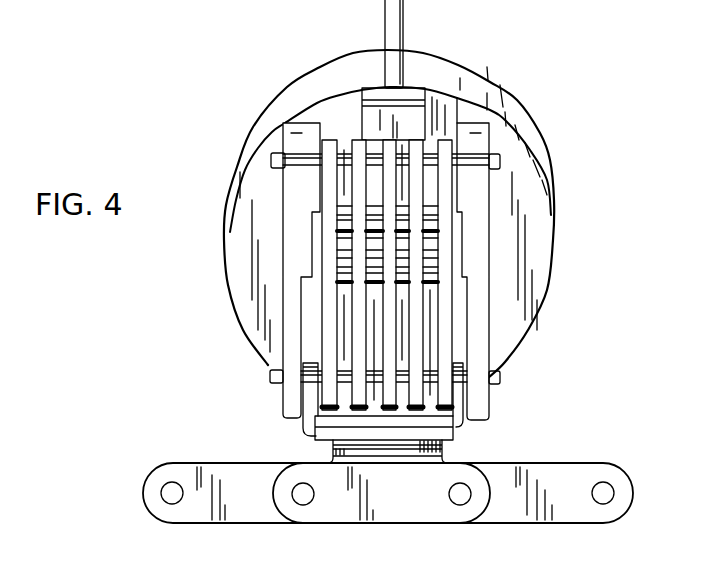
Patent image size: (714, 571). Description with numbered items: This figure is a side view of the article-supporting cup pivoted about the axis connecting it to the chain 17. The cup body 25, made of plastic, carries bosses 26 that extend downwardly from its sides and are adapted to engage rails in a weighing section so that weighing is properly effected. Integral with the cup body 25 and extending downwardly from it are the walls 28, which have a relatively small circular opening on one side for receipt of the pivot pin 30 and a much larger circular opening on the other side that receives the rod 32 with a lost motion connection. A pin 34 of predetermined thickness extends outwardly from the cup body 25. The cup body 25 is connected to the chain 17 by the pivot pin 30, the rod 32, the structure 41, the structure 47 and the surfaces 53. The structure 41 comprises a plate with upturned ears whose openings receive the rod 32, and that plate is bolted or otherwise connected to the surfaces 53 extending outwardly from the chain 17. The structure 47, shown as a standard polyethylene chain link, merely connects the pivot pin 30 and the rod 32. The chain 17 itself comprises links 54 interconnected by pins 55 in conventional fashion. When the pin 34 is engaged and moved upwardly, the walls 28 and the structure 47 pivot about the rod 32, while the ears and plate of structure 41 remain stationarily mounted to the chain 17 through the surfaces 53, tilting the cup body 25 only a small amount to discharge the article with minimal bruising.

The chain 17 is at (303, 530).
The cup body 25 is at (496, 101).
The bosses 26 is at (372, 100).
The walls 28 is at (293, 200).
The pivot pin 30 is at (275, 162).
The pin (pivot rod) 32 is at (268, 377).
The pin 34 is at (398, 28).
The structure (plate with upturned ears) 41 is at (466, 427).
The structure (chain link) 47 is at (321, 112).
The surfaces 53 is at (347, 440).
The links 54 is at (223, 470).
The pins 55 is at (302, 487).